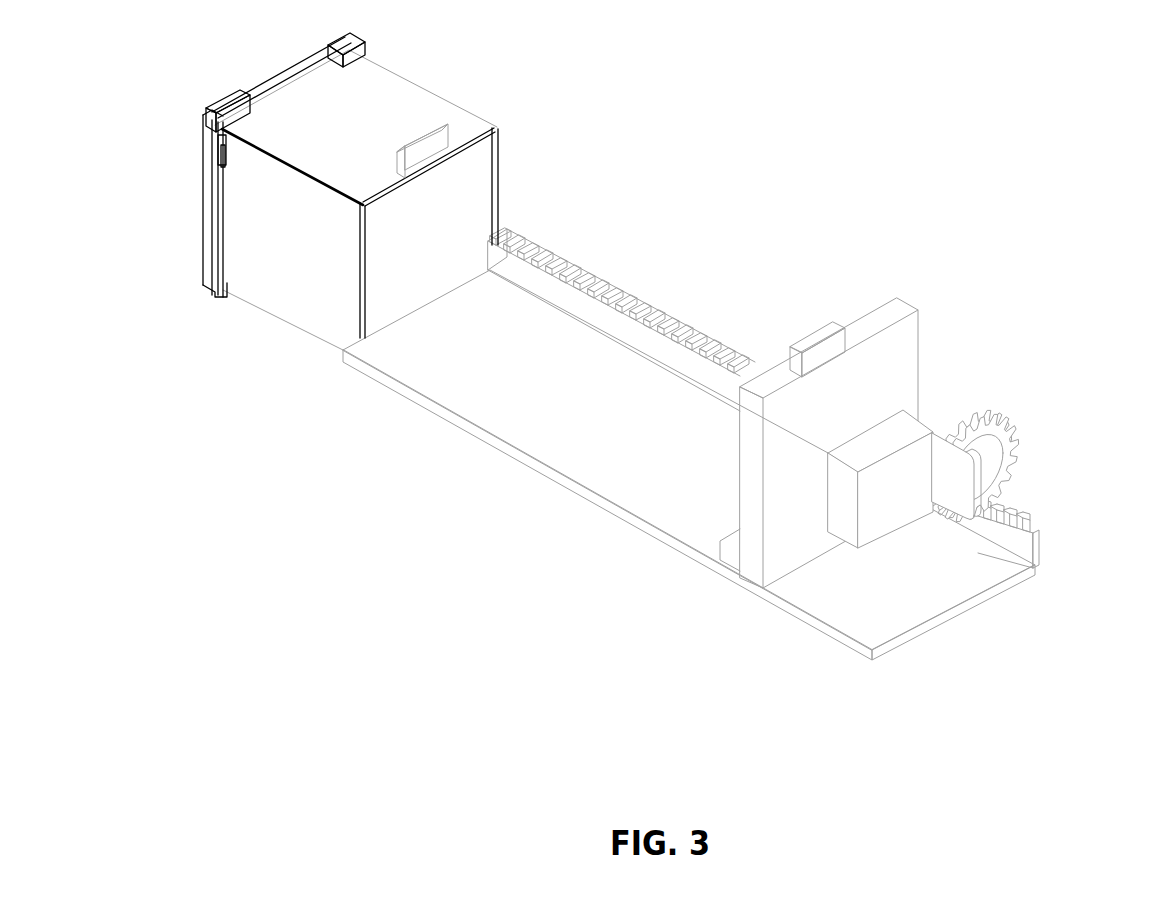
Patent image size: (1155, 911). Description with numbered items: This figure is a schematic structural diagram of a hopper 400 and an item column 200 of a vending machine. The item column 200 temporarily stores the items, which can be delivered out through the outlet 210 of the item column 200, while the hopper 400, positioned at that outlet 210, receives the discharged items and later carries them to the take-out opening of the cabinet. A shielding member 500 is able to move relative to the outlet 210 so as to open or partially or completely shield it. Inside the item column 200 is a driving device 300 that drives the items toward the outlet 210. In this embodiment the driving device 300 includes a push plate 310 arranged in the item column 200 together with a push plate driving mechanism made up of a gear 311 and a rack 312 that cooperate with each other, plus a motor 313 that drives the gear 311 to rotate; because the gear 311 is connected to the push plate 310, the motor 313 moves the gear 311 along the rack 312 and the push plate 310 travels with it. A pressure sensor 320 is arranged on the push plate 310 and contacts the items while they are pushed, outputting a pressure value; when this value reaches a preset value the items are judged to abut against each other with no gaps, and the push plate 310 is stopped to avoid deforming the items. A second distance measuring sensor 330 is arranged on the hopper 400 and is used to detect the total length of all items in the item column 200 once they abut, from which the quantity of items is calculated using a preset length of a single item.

The item column 200 is at (760, 282).
The outlet of item column 210 is at (370, 350).
The driving device 300 is at (868, 433).
The push plate 310 is at (883, 318).
The gear 311 is at (1002, 452).
The rack 312 is at (1025, 527).
The motor 313 is at (898, 487).
The pressure sensor 320 is at (733, 557).
The second distance measuring sensor 330 is at (438, 147).
The hopper 400 is at (377, 110).
The shielding member 500 is at (475, 203).